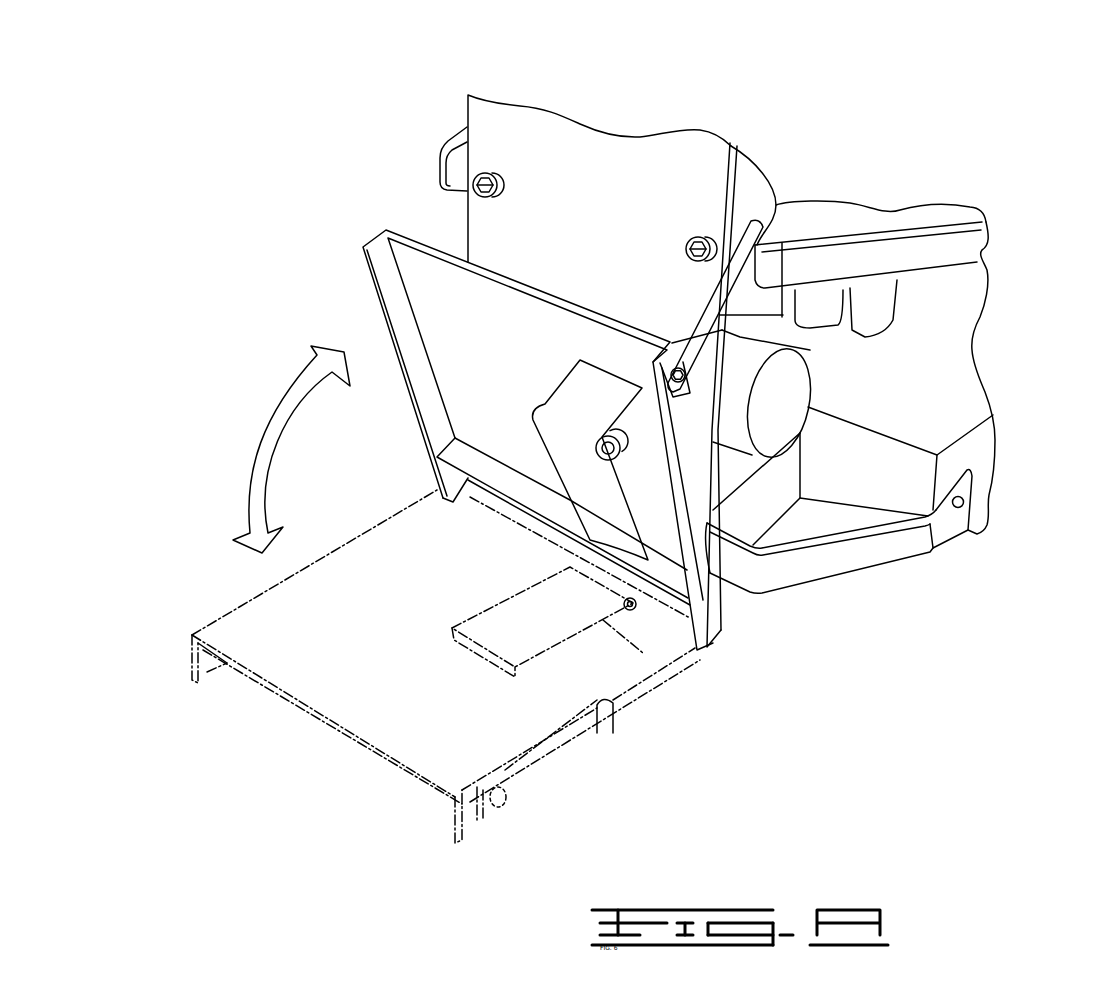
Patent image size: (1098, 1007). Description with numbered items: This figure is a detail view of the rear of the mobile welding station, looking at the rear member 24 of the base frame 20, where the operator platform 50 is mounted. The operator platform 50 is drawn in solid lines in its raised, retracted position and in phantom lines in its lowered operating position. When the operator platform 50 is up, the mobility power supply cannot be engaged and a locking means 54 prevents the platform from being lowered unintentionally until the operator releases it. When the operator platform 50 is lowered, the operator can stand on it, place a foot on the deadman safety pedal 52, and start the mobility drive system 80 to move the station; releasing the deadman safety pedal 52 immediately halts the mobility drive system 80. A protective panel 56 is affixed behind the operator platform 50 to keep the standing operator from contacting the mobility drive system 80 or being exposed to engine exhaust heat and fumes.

The base frame 20 is at (952, 390).
The rear member 24 is at (887, 497).
The operator platform 50 is at (365, 237).
The deadman safety pedal 52 is at (627, 450).
The locking means 54 is at (757, 227).
The protective panel 56 is at (517, 127).
The mobility drive system 80 is at (883, 220).